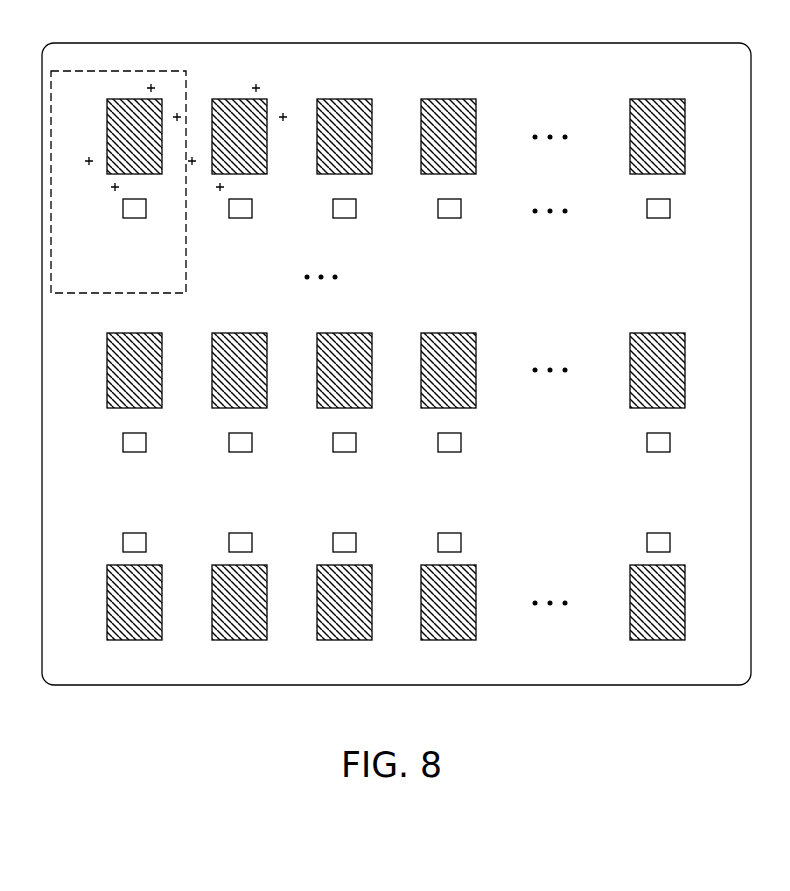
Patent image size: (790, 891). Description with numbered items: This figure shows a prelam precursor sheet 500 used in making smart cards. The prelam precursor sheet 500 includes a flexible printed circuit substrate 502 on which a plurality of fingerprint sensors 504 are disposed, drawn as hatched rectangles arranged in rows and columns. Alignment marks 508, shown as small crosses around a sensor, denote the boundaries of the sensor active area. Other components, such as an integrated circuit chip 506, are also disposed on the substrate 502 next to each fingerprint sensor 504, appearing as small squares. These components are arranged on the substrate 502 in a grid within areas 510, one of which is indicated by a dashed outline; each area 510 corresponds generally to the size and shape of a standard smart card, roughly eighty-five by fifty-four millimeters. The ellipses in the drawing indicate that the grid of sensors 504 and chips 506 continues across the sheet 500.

The prelam precursor sheet 500 is at (378, 383).
The flexible printed circuit substrate 502 is at (200, 668).
The fingerprint sensor 504 is at (220, 102).
The integrated circuit chip 506 is at (142, 208).
The alignment marks 508 is at (89, 161).
The area 510 is at (50, 263).